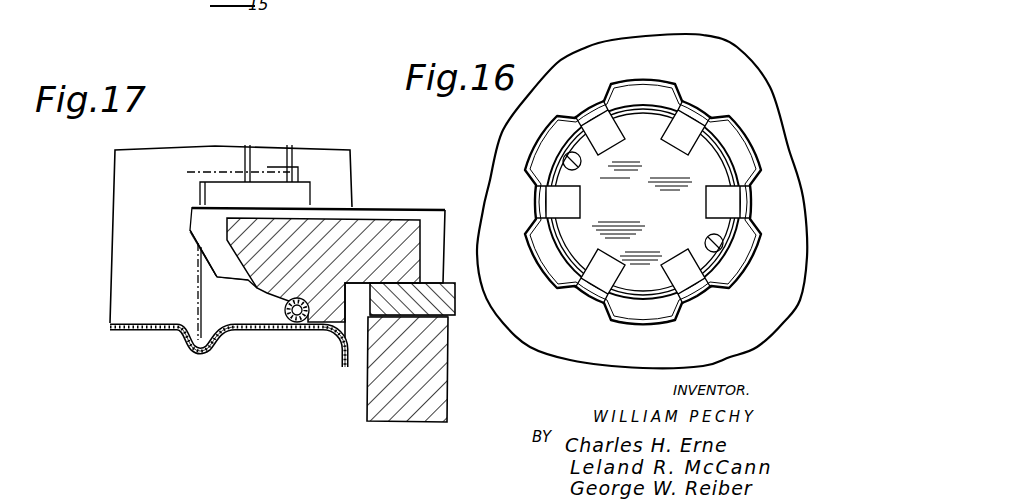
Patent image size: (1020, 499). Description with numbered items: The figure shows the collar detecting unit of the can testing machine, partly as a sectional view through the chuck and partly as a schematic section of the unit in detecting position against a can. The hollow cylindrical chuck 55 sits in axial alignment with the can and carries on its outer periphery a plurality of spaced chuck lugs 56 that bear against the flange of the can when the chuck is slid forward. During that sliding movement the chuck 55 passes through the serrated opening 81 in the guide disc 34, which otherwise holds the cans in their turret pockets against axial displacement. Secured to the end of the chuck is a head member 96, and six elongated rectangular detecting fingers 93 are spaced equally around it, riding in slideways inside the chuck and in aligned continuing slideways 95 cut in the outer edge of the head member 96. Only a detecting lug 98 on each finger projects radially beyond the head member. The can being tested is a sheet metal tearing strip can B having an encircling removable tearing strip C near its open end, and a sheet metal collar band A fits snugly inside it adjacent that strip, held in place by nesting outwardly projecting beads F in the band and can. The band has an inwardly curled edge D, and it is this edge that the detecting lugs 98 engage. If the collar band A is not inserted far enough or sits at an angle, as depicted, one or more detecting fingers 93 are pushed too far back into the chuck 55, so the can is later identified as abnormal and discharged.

In FIG. 17, the guide disc 34 is at (430, 388).
In FIG. 16, the guide disc 34 is at (707, 52).
In FIG. 17, the hollow cylindrical chuck 55 is at (437, 303).
In FIG. 16, the hollow cylindrical chuck 55 is at (650, 102).
In FIG. 16, the chuck lugs 56 is at (643, 83).
In FIG. 17, the serrated opening 81 is at (414, 324).
In FIG. 16, the serrated opening 81 is at (720, 114).
In FIG. 17, the detecting fingers 93 is at (387, 230).
In FIG. 16, the detecting fingers 93 is at (675, 138).
In FIG. 17, the continuing slideways 95 is at (214, 254).
In FIG. 16, the continuing slideways 95 is at (605, 165).
In FIG. 17, the head member 96 is at (208, 218).
In FIG. 16, the head member 96 is at (633, 123).
In FIG. 17, the detecting lug 98 is at (328, 313).
In FIG. 17, the collar band A is at (223, 298).
In FIG. 17, the tearing strip can B is at (142, 329).
In FIG. 17, the tearing strip C is at (266, 333).
In FIG. 17, the curled edge D is at (286, 308).
In FIG. 17, the beads F is at (205, 352).